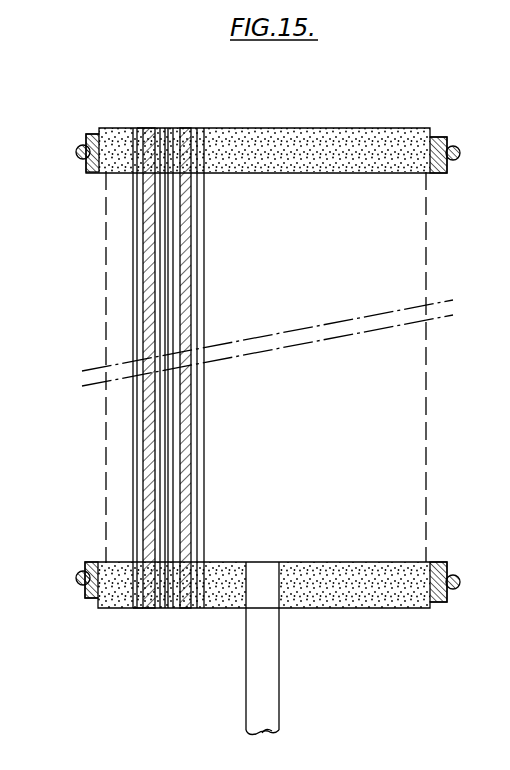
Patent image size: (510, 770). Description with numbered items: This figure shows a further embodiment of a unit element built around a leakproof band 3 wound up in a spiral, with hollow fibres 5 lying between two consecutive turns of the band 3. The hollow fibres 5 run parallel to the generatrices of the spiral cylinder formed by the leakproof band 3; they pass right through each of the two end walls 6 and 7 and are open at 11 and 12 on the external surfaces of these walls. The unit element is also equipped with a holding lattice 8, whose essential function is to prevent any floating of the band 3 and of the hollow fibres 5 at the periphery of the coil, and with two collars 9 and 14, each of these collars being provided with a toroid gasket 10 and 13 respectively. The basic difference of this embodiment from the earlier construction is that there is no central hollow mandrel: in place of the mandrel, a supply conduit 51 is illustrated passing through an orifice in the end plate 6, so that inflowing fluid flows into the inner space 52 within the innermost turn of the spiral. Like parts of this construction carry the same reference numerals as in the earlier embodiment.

The leakproof band 3 is at (148, 142).
The hollow fibres 5 is at (133, 440).
The end wall 6 is at (213, 585).
The end wall 7 is at (315, 148).
The holding lattice 8 is at (104, 483).
The collar 9 is at (86, 562).
The toroid gasket 10 is at (75, 578).
The open end of hollow fibres 11 is at (135, 127).
The open end of hollow fibres 12 is at (132, 609).
The toroid gasket 13 is at (75, 152).
The collar 14 is at (88, 168).
The supply conduit 51 is at (265, 640).
The inner space 52 is at (315, 540).